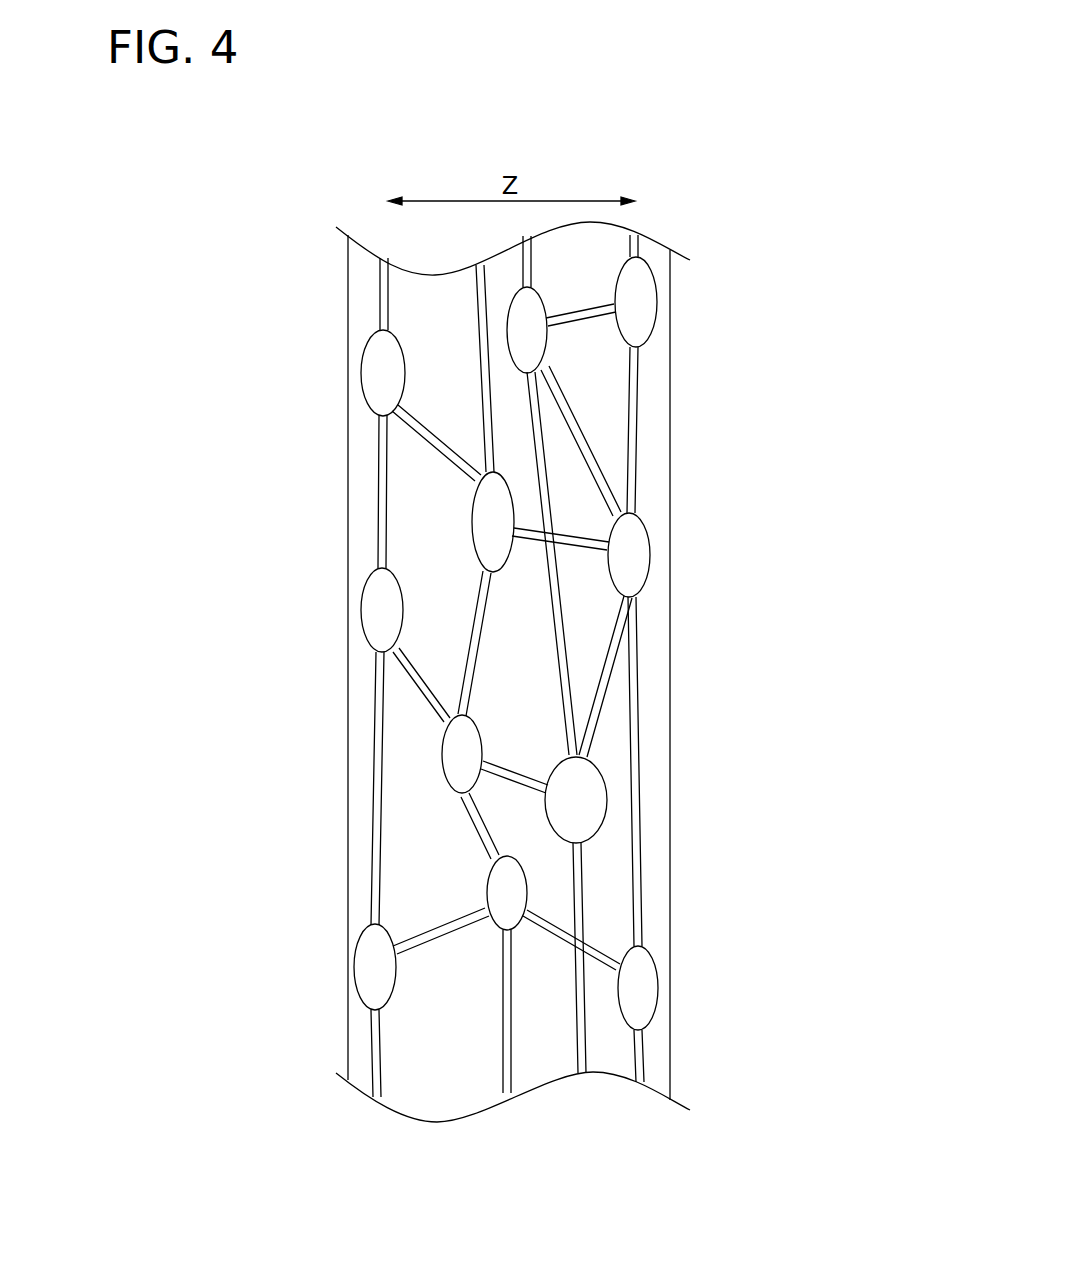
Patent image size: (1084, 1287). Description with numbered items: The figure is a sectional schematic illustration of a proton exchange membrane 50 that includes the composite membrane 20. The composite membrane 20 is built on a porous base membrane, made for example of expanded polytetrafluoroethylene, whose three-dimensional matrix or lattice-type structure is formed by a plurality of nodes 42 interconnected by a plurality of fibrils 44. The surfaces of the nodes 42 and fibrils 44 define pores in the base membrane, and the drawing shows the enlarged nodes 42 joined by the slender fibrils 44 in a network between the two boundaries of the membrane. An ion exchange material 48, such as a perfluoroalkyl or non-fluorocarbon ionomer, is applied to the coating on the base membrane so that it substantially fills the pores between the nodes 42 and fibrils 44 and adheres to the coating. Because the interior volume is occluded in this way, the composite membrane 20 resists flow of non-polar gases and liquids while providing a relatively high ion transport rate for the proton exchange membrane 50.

The proton exchange membrane 50 is at (690, 198).
The composite membrane 20 is at (641, 444).
The node 42 is at (630, 570).
The fibril 44 is at (635, 732).
The ion exchange material 48 is at (410, 497).